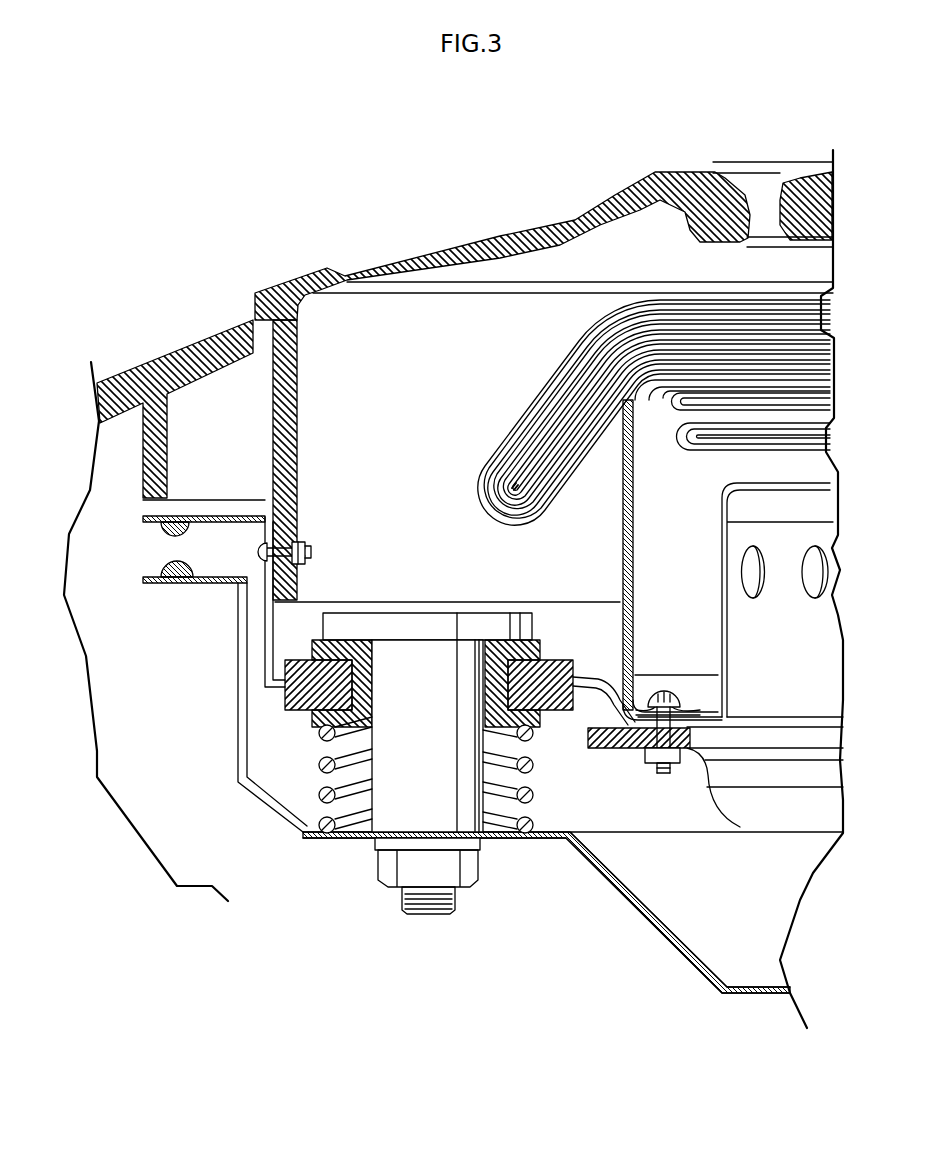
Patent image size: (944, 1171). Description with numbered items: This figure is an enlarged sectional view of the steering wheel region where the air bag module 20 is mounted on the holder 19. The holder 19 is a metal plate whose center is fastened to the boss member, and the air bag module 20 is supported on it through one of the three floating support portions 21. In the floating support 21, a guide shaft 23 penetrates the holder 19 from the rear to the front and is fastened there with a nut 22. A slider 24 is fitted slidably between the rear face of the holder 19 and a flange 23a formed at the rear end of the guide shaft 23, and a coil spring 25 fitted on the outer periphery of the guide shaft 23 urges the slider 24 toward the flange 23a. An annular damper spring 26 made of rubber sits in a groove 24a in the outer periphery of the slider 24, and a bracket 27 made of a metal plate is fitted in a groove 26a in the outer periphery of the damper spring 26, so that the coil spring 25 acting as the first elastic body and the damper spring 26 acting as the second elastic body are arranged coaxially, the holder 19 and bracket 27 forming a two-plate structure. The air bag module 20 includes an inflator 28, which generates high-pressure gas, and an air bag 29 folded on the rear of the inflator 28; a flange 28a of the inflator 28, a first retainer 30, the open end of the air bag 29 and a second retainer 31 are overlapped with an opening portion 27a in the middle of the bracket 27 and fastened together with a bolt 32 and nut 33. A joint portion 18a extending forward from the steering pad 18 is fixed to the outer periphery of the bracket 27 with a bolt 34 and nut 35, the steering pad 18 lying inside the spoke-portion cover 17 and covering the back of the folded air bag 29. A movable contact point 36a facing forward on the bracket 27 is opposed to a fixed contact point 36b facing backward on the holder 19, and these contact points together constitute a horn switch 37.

The spoke-portion cover 17 is at (192, 345).
The steering pad 18 is at (512, 225).
The joint portion 18a is at (297, 430).
The holder 19 is at (668, 940).
The air bag module 20 is at (505, 323).
The floating support portion 21 is at (293, 793).
The nut 22 is at (478, 866).
The guide shaft 23 is at (366, 818).
The flange 23a is at (418, 620).
The slider 24 is at (548, 643).
The groove 24a is at (510, 680).
The coil spring 25 is at (319, 765).
The damper spring 26 is at (301, 656).
The groove 26a is at (292, 710).
The bracket 27 is at (588, 672).
The opening portion 27a is at (727, 727).
The inflator 28 is at (720, 545).
The flange 28a is at (612, 750).
The air bag 29 is at (548, 400).
The first retainer 30 is at (700, 717).
The second retainer 31 is at (690, 678).
The bolt 32 is at (662, 692).
The nut 33 is at (675, 765).
The bolt 34 is at (258, 550).
The nut 35 is at (305, 553).
The movable contact point 36a is at (166, 533).
The fixed contact point 36b is at (166, 572).
The horn switch 37 is at (150, 562).